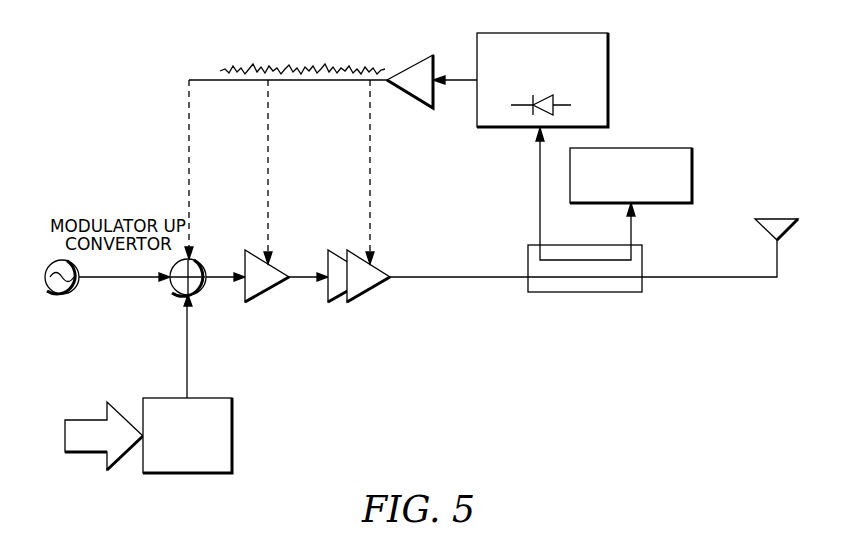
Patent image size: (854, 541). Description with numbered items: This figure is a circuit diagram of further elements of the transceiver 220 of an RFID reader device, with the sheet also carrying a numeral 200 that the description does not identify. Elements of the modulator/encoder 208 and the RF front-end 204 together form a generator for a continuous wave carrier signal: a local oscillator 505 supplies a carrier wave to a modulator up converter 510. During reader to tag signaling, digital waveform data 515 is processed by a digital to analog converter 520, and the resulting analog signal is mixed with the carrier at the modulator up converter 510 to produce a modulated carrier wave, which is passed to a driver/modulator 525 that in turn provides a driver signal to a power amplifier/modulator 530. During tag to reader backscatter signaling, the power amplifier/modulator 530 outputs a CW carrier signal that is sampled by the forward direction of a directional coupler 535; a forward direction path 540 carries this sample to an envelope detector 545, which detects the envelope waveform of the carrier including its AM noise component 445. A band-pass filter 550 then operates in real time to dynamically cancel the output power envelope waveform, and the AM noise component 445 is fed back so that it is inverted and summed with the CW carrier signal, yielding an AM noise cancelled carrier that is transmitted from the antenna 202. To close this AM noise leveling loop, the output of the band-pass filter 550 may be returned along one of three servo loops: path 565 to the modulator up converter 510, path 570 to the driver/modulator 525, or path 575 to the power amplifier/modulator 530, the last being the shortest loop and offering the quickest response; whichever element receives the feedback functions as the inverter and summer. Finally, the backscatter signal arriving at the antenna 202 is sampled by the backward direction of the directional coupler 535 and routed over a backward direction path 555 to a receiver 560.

The transmitter system 200 is at (753, 537).
The antenna 202 is at (776, 218).
The RF front-end 204 is at (667, 361).
The modulator/encoder 208 is at (318, 362).
The transceiver 220 is at (700, 48).
The AM noise component 445 is at (311, 66).
The local oscillator 505 is at (73, 289).
The modulator up converter 510 is at (198, 261).
The digital waveform data 515 is at (85, 453).
The digital to analog converter 520 is at (213, 398).
The driver/modulator 525 is at (270, 264).
The power amplifier/modulator 530 is at (372, 264).
The directional coupler 535 is at (633, 243).
The forward direction path 540 is at (540, 185).
The envelope detector 545 is at (595, 32).
The band-pass filter 550 is at (409, 96).
The backward direction path 555 is at (631, 222).
The receiver 560 is at (683, 148).
The feedback path to modulator up converter 565 is at (189, 110).
The feedback path to driver/modulator 570 is at (268, 172).
The feedback path to power amplifier/modulator 575 is at (370, 149).